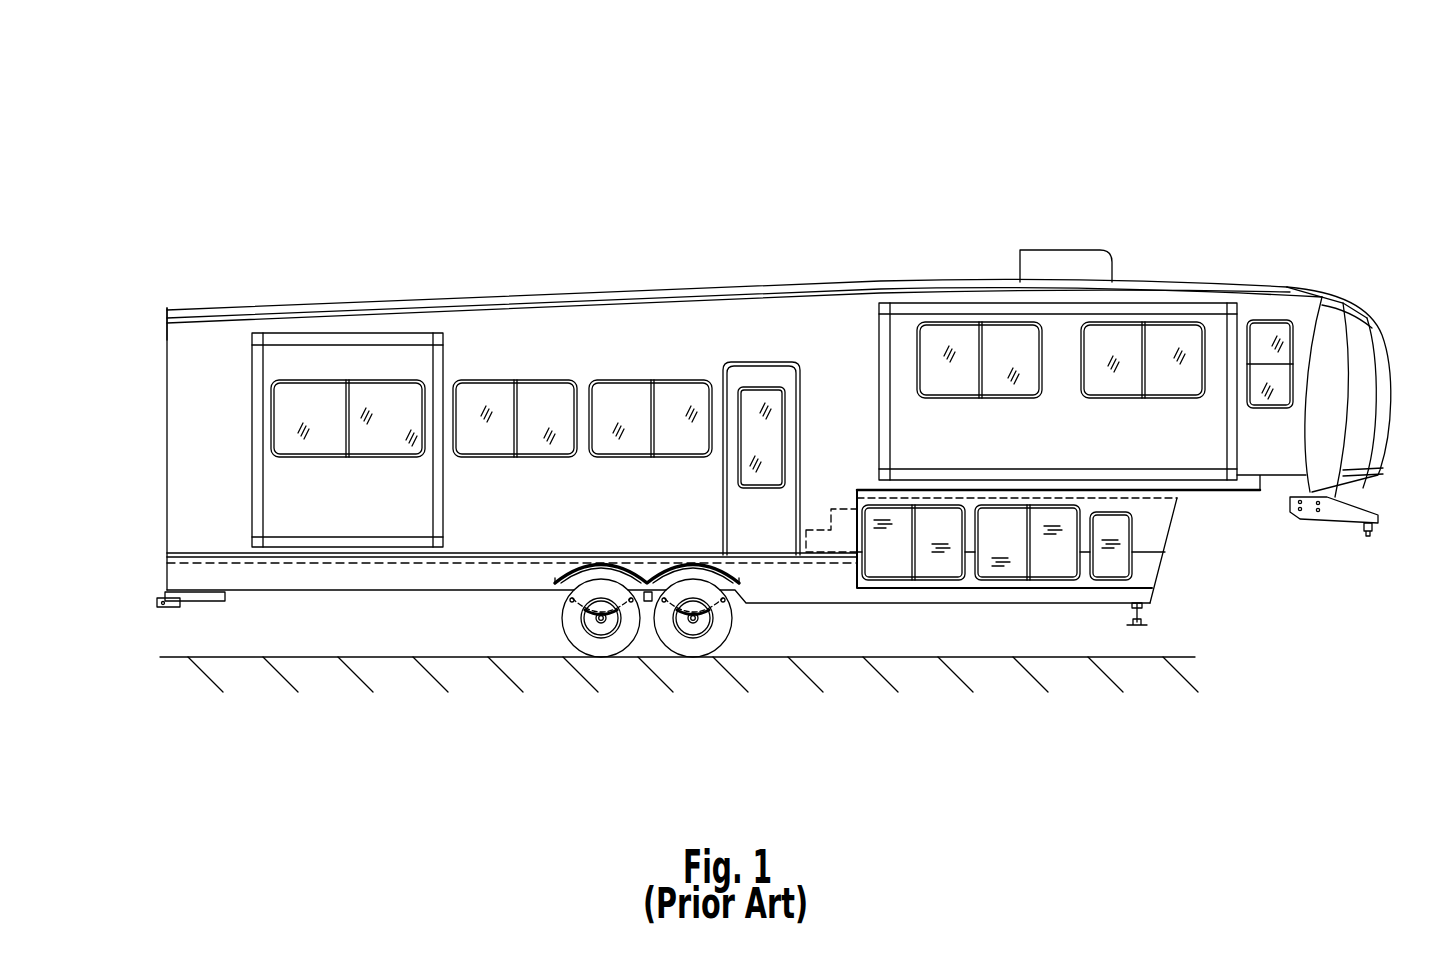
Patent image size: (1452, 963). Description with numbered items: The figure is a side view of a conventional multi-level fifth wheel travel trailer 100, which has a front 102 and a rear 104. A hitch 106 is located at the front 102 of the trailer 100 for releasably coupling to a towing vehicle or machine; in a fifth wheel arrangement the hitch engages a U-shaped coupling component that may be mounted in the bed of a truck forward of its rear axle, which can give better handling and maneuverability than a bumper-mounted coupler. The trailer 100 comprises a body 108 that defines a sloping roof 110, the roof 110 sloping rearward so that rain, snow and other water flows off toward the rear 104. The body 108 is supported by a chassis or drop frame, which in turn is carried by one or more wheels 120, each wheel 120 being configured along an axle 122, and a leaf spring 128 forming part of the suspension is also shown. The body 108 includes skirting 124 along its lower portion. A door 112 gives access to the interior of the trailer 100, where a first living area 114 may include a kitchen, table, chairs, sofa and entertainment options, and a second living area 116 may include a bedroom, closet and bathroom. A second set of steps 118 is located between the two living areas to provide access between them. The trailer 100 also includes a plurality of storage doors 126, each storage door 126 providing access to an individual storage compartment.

The multi-level fifth wheel travel trailer 100 is at (1043, 137).
The front 102 is at (1398, 332).
The rear 104 is at (132, 382).
The hitch 106 is at (1368, 537).
The body 108 is at (1270, 308).
The sloping roof 110 is at (395, 308).
The door 112 is at (760, 377).
The first living area 114 is at (538, 373).
The second living area 116 is at (1185, 443).
The second set of steps 118 is at (832, 554).
The wheels 120 is at (623, 643).
The axle 122 is at (601, 625).
The skirting 124 is at (806, 592).
The storage doors 126 is at (1110, 570).
The leaf spring 128 is at (558, 609).